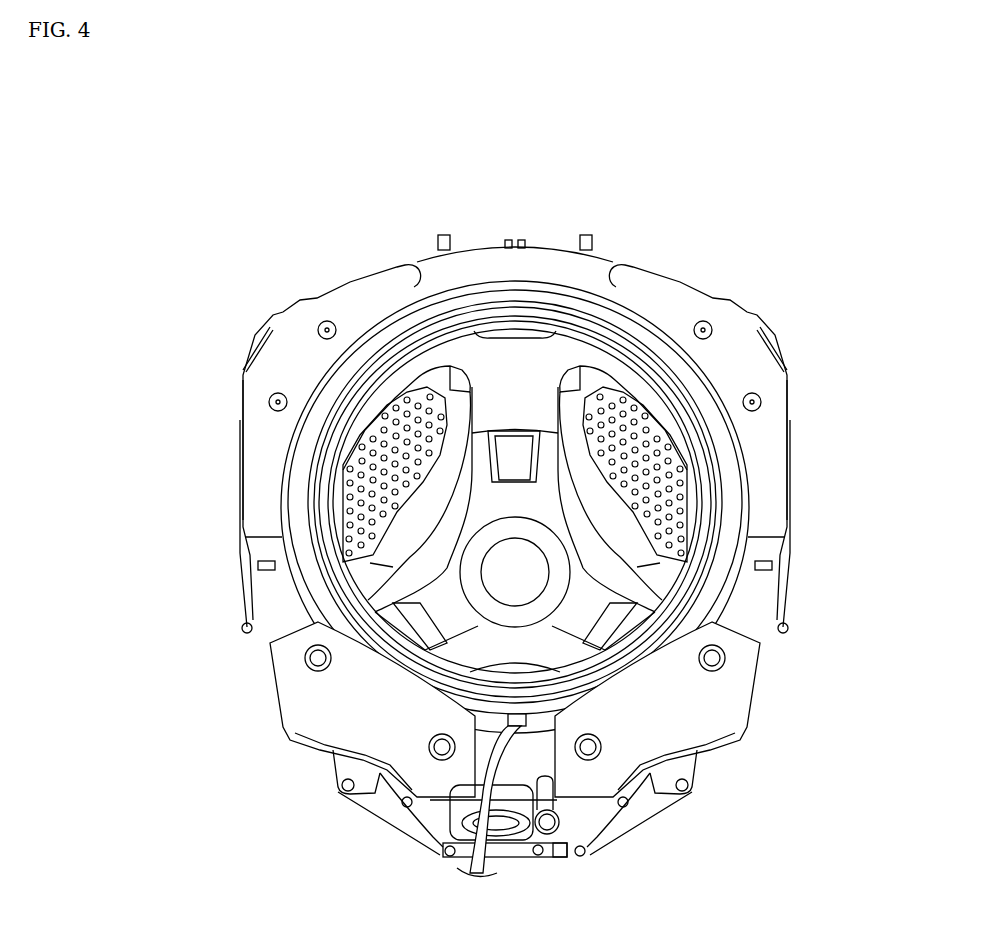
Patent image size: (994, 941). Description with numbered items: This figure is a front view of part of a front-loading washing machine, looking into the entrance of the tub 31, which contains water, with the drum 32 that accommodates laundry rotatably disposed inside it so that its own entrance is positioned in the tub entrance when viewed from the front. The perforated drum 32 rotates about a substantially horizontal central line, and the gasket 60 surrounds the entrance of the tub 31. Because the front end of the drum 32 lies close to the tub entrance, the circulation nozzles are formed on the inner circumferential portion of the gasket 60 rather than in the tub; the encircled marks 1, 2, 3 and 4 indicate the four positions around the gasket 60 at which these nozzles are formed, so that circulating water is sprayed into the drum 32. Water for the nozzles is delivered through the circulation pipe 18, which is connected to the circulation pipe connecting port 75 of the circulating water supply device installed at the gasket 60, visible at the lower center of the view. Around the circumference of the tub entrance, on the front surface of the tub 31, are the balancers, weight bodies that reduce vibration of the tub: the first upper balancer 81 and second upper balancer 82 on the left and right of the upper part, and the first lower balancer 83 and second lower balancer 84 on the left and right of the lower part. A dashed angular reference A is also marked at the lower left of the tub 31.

The tub 31 is at (535, 273).
The drum 32 is at (650, 577).
The gasket 60 is at (573, 310).
The first upper balancer 81 is at (215, 398).
The second upper balancer 82 is at (768, 367).
The first lower balancer 83 is at (392, 775).
The second lower balancer 84 is at (718, 712).
The circulation pipe connecting port 75 is at (526, 716).
The circulation pipe 18 is at (512, 828).
The first nozzle position 1 is at (343, 393).
The second nozzle position 2 is at (342, 558).
The third nozzle position 3 is at (690, 558).
The fourth nozzle position 4 is at (690, 393).
The angle A is at (393, 565).